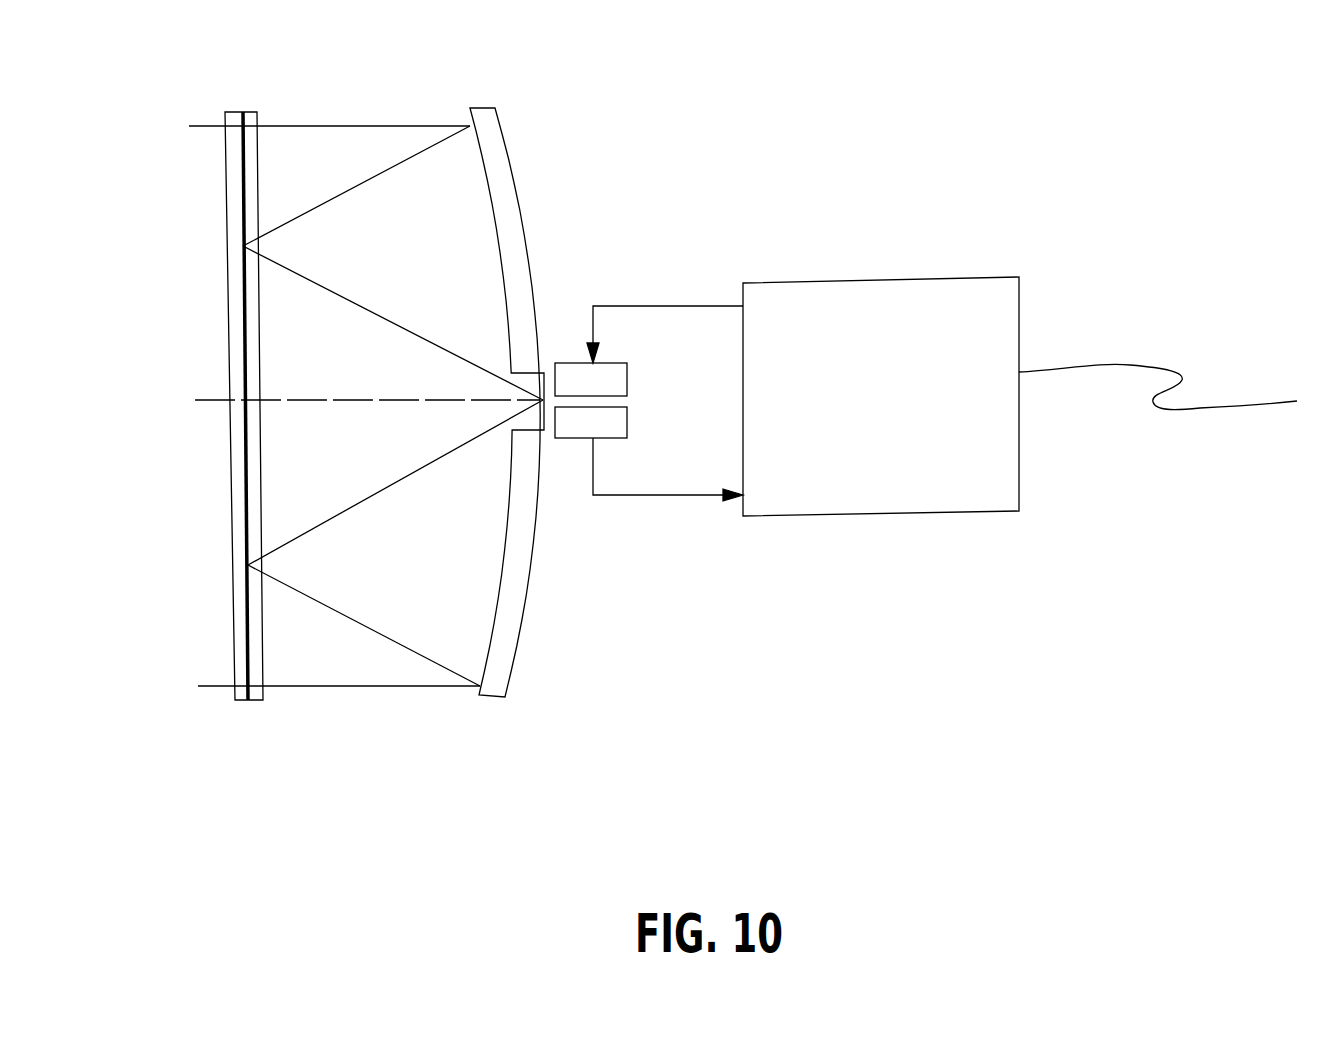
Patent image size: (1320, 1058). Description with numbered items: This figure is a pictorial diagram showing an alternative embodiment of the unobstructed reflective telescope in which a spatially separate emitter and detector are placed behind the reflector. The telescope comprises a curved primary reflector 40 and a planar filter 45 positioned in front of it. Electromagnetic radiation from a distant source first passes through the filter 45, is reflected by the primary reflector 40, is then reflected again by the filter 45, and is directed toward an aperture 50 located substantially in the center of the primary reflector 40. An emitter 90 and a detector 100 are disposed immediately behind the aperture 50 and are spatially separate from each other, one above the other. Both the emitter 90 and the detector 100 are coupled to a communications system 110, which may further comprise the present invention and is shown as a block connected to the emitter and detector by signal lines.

The primary reflector 40 is at (527, 240).
The filter 45 is at (240, 112).
The aperture 50 is at (543, 400).
The emitter 90 is at (628, 372).
The detector 100 is at (628, 420).
The communications system 110 is at (1020, 467).